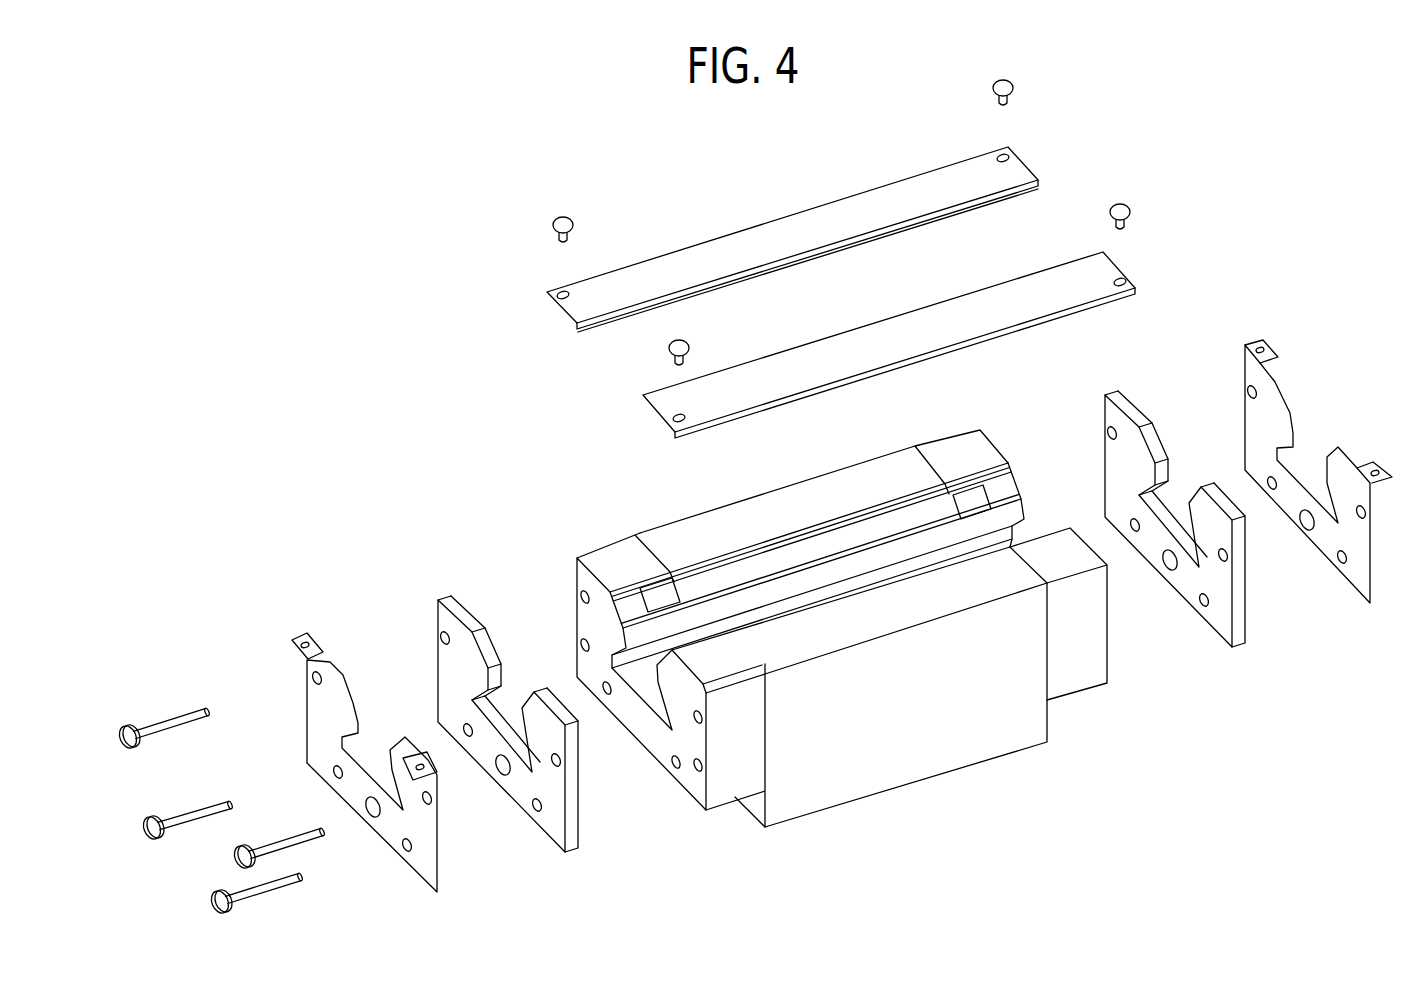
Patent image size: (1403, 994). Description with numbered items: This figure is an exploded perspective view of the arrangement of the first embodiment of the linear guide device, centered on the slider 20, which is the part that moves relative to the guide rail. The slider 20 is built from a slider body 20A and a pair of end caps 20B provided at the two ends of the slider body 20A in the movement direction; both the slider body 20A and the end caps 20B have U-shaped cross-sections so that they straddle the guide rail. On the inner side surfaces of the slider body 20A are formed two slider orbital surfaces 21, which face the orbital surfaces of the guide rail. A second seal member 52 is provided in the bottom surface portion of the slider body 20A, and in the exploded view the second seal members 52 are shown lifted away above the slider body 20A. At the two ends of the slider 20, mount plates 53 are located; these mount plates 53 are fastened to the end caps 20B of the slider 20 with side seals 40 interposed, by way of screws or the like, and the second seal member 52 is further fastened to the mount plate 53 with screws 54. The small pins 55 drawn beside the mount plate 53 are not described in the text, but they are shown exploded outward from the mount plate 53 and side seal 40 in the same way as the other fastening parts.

The slider 20 is at (973, 804).
The slider body 20A is at (790, 502).
The end caps 20B is at (615, 552).
The slider orbital surfaces 21 is at (633, 607).
The side seals 40 is at (547, 825).
The second seal member 52 is at (797, 225).
The mount plates 53 is at (418, 867).
The screws 54 is at (558, 218).
The pin 55 is at (120, 736).